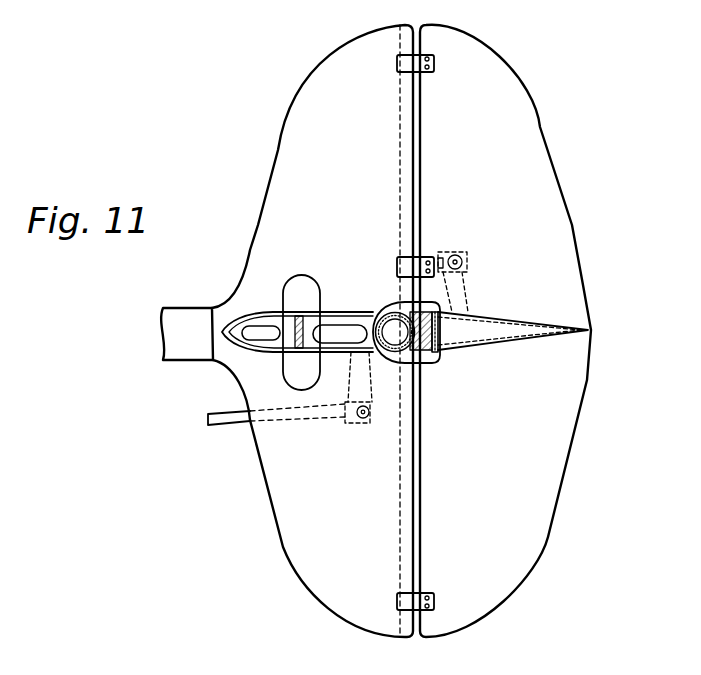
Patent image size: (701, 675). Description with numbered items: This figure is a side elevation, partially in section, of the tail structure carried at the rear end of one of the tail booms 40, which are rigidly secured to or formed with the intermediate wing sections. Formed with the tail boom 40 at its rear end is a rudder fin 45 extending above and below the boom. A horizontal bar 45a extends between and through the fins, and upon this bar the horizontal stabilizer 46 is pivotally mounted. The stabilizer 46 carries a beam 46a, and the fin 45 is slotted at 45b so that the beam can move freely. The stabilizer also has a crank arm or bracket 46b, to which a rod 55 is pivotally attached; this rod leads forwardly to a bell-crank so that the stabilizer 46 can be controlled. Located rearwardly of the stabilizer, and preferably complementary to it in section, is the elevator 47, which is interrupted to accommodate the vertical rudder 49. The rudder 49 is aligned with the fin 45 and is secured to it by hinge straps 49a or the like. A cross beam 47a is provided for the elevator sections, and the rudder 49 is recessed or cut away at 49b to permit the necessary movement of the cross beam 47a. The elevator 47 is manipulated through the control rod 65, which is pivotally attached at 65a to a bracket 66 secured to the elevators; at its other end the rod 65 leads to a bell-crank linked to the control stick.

The tail boom 40 is at (187, 312).
The rudder fin 45 is at (281, 200).
The horizontal bar 45a is at (384, 304).
The slot 45b is at (317, 278).
The horizontal stabilizer 46 is at (242, 347).
The beam 46a is at (288, 323).
The crank arm 46b is at (350, 410).
The elevator 47 is at (517, 327).
The cross beam 47a is at (450, 333).
The vertical rudder 49 is at (568, 238).
The hinge strap 49a is at (436, 63).
The recess 49b is at (426, 78).
The rod 55 is at (227, 422).
The control rod 65 is at (443, 252).
The pivotal attachment 65a is at (470, 263).
The bracket 66 is at (468, 287).